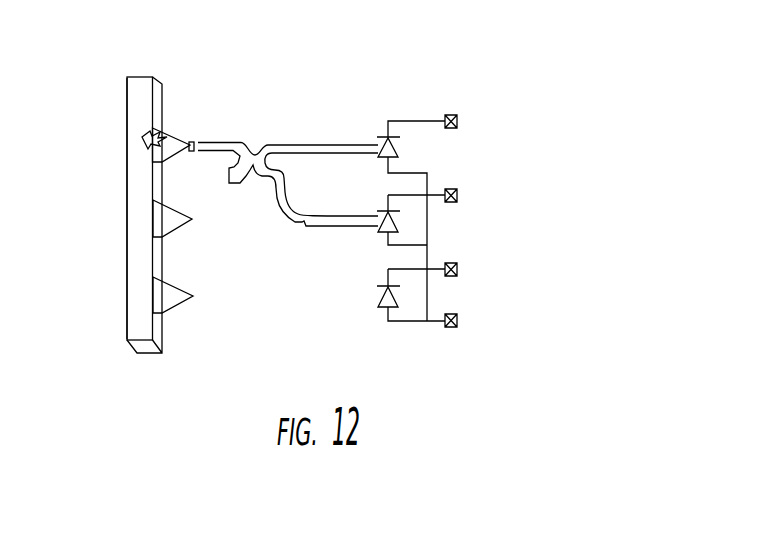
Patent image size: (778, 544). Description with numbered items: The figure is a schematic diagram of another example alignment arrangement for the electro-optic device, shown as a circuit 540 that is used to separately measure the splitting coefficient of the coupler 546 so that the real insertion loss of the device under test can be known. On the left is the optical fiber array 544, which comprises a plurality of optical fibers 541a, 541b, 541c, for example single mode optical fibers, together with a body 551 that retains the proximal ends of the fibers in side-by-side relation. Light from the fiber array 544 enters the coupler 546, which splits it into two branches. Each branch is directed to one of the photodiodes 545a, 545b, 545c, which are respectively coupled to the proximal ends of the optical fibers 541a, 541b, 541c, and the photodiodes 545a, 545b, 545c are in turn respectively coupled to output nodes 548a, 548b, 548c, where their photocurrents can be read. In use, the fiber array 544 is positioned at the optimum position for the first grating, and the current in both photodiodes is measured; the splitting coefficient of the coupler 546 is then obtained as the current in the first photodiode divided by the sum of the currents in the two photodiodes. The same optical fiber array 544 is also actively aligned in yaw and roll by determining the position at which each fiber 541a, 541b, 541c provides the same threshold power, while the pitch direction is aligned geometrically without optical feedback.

The circuit 540 is at (578, 111).
The optical fiber array 544 is at (118, 118).
The body 551 is at (144, 79).
The optical fiber 541a is at (155, 150).
The optical fiber 541b is at (157, 218).
The optical fiber 541c is at (157, 298).
The coupler 546 is at (262, 152).
The photodiode 545a is at (397, 137).
The photodiode 545b is at (378, 227).
The photodiode 545c is at (385, 297).
The output node 548a is at (451, 115).
The output node 548b is at (457, 195).
The output node 548c is at (457, 269).